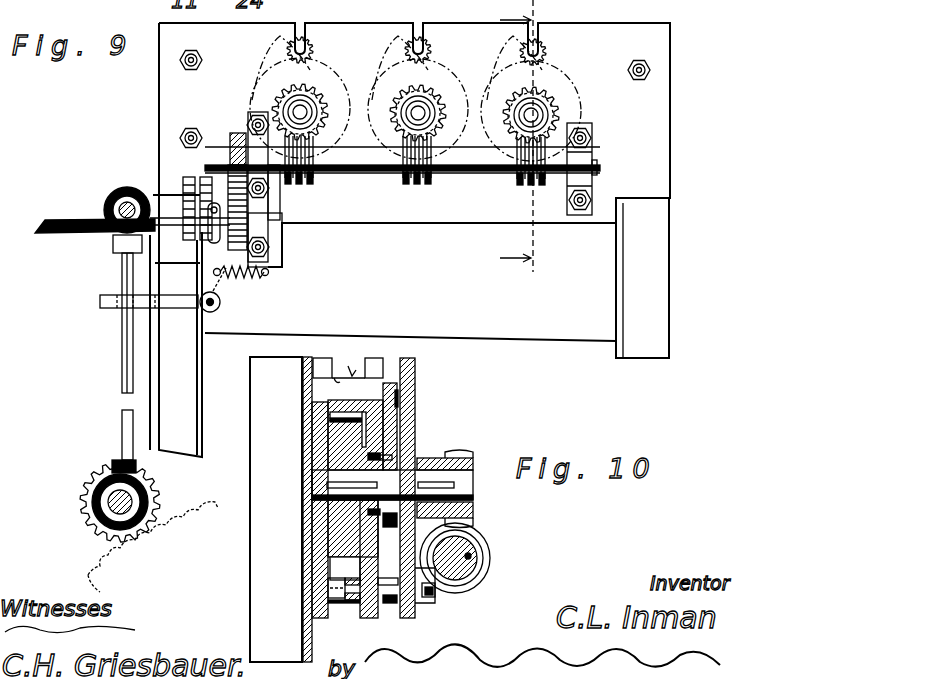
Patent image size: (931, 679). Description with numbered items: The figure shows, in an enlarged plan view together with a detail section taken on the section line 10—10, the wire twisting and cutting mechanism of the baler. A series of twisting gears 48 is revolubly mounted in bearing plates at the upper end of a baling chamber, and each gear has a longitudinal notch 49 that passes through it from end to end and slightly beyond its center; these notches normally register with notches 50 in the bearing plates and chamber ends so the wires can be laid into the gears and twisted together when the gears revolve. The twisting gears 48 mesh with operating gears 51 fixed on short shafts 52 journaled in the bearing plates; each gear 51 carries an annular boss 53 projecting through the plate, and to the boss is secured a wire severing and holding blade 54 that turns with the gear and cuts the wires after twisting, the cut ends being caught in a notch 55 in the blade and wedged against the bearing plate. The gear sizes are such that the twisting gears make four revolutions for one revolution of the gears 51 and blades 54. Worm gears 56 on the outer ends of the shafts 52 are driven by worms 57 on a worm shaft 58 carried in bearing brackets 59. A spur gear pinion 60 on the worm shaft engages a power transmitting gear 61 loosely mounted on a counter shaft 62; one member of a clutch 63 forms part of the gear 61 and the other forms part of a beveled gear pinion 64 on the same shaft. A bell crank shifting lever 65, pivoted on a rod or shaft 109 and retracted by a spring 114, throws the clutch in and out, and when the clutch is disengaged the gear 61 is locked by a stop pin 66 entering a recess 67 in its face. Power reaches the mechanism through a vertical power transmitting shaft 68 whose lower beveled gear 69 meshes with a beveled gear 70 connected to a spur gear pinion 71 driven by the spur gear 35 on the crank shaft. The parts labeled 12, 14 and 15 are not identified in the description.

In FIG. 9, the section line 10 is at (517, 149).
In FIG. 9, the table 12 is at (52, 226).
In FIG. 9, the pulley hub 14 is at (104, 207).
In FIG. 9, the pulley 15 is at (116, 190).
In FIG. 9, the spur gear 35 is at (88, 575).
In FIG. 9, the twisting gear 48 is at (552, 60).
In FIG. 10, the twisting gear 48 is at (318, 404).
In FIG. 10, the notch 49 is at (347, 360).
In FIG. 9, the notch 50 is at (420, 40).
In FIG. 10, the notch 50 is at (400, 378).
In FIG. 9, the operating gear 51 is at (584, 104).
In FIG. 10, the operating gear 51 is at (304, 548).
In FIG. 9, the short shaft 52 is at (545, 116).
In FIG. 10, the short shaft 52 is at (460, 482).
In FIG. 10, the annular boss 53 is at (392, 430).
In FIG. 9, the wire severing and holding blade 54 is at (500, 72).
In FIG. 10, the wire severing and holding blade 54 is at (395, 455).
In FIG. 10, the notch 55 is at (405, 398).
In FIG. 9, the worm gear 56 is at (552, 104).
In FIG. 10, the worm gear 56 is at (468, 454).
In FIG. 9, the worm 57 is at (525, 196).
In FIG. 10, the worm 57 is at (482, 562).
In FIG. 9, the worm shaft 58 is at (500, 178).
In FIG. 10, the worm shaft 58 is at (478, 540).
In FIG. 9, the bearing bracket 59 is at (268, 200).
In FIG. 10, the bearing bracket 59 is at (438, 603).
In FIG. 9, the spur gear pinion 60 is at (236, 130).
In FIG. 9, the power transmitting gear 61 is at (230, 180).
In FIG. 9, the counter shaft 62 is at (275, 216).
In FIG. 9, the clutch 63 is at (200, 182).
In FIG. 9, the beveled gear pinion 64 is at (165, 205).
In FIG. 9, the bell crank shifting lever 65 is at (182, 304).
In FIG. 9, the stop pin 66 is at (278, 262).
In FIG. 9, the recess 67 is at (238, 278).
In FIG. 9, the power transmitting shaft 68 is at (122, 428).
In FIG. 9, the beveled gear 69 is at (112, 468).
In FIG. 9, the beveled gear 70 is at (100, 500).
In FIG. 9, the spur gear pinion 71 is at (90, 518).
In FIG. 9, the rod or shaft 109 is at (214, 312).
In FIG. 9, the spring 114 is at (256, 280).